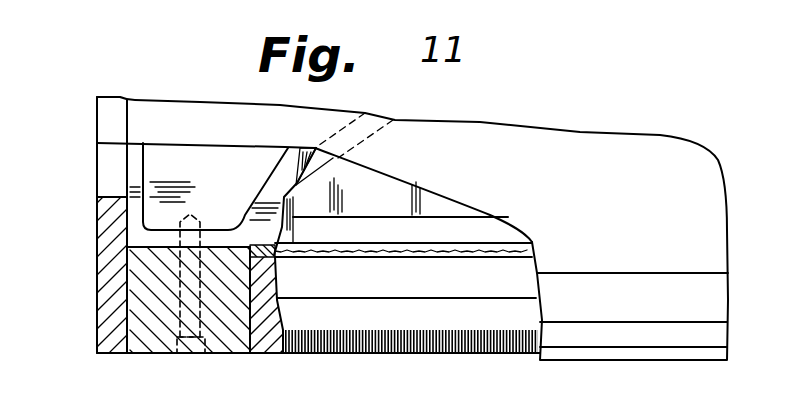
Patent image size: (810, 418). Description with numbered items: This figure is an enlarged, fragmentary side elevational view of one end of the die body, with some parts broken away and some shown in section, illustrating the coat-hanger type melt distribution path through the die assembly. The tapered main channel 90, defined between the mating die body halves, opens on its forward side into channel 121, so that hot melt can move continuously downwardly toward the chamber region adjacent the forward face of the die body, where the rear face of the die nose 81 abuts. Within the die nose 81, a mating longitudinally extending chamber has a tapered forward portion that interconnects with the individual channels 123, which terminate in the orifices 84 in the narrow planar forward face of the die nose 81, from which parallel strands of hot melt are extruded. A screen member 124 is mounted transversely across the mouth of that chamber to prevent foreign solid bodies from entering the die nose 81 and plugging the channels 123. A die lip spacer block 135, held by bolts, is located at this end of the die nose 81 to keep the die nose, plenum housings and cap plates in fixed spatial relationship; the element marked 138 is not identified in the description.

The main channel 90 is at (362, 137).
The die nose 81 is at (621, 240).
The side wall 138 is at (110, 258).
The screen member 124 is at (265, 247).
The die lip spacer block 135 is at (153, 340).
The channel 121 is at (374, 206).
The channel 123 is at (372, 332).
The orifice 84 is at (372, 372).